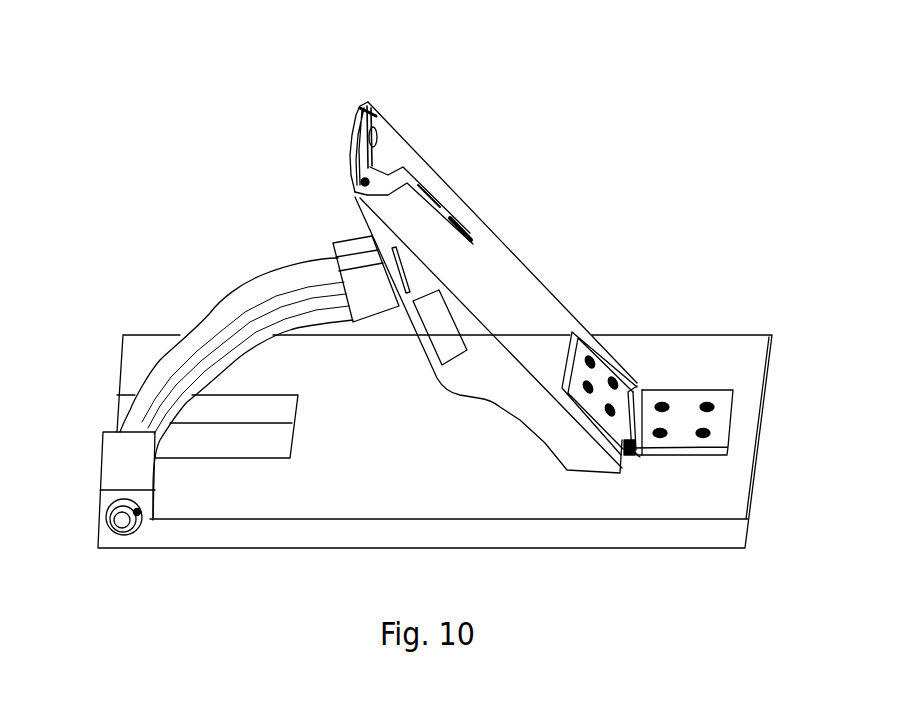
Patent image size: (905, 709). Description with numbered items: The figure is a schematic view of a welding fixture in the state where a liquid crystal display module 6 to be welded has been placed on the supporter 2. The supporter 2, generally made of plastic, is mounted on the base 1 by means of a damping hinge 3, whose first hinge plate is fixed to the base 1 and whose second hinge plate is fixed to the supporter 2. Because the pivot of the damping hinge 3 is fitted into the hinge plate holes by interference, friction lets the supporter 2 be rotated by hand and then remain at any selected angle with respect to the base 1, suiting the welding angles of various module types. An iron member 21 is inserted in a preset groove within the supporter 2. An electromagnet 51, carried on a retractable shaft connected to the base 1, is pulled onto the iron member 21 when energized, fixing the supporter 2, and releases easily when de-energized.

The base 1 is at (490, 480).
The supporter 2 is at (490, 268).
The iron member 21 is at (443, 338).
The damping hinge 3 is at (645, 385).
The electromagnet 51 is at (351, 243).
The liquid crystal display module 6 is at (357, 140).